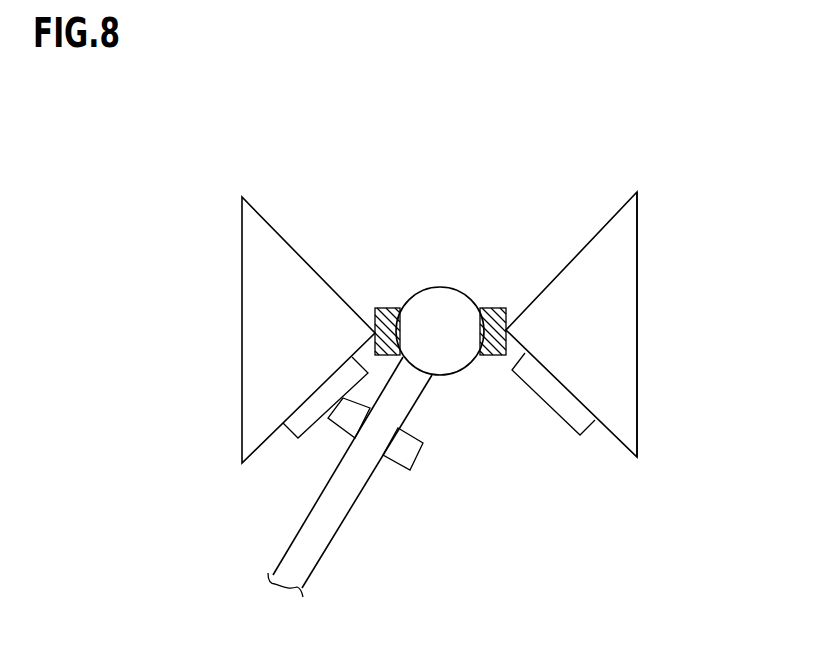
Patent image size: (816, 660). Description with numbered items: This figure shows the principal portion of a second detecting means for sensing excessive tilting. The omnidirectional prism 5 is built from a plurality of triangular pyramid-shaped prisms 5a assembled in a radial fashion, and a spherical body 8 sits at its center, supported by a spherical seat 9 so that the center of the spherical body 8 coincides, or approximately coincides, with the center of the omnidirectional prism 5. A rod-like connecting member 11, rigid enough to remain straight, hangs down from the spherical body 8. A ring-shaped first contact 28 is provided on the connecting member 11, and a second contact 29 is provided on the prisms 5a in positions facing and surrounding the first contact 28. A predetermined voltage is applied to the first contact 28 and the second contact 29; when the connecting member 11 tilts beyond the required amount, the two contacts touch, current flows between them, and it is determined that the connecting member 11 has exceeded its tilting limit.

The omnidirectional prism 5 is at (640, 318).
The triangular pyramid-shaped prism 5a is at (637, 249).
The spherical body 8 is at (437, 287).
The spherical seat 9 is at (385, 308).
The connecting member 11 is at (345, 518).
The first contact 28 is at (418, 452).
The second contact 29 is at (293, 438).